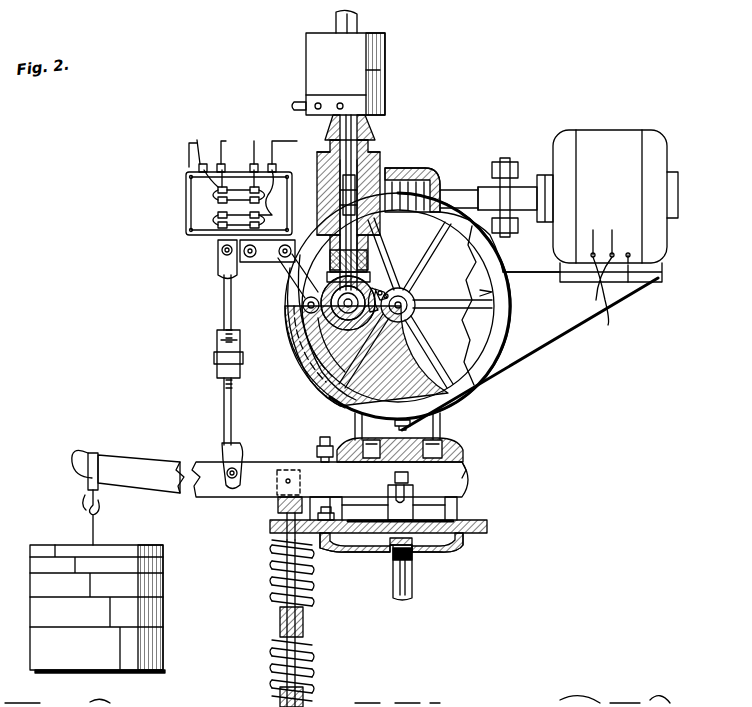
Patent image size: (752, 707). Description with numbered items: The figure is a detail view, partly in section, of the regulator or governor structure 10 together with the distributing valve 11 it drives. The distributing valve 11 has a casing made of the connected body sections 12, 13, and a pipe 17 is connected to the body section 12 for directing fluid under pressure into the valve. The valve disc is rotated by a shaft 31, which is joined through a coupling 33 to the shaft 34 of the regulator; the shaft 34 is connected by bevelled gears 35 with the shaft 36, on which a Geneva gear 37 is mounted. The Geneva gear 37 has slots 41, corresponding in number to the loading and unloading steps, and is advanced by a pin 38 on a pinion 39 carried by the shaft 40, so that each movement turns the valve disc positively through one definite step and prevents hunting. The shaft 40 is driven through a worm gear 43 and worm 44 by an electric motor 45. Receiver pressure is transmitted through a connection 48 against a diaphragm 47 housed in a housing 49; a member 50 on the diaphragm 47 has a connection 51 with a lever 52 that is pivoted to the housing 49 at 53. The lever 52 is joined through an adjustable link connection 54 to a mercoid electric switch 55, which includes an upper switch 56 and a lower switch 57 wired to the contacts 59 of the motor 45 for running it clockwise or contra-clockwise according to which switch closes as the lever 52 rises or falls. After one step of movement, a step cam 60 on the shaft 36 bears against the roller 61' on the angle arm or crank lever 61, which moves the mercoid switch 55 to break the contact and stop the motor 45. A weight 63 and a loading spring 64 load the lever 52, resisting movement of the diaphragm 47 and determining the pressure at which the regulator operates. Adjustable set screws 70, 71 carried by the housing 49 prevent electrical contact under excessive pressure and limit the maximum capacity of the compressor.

The regulator or governor structure 10 is at (505, 358).
The distributing valve 11 is at (370, 76).
The body section 12 is at (364, 50).
The body section 13 is at (385, 106).
The pipe 17 is at (357, 22).
The shaft 31 is at (347, 162).
The coupling 33 is at (330, 185).
The shaft 34 is at (298, 262).
The bevelled gears 35 is at (303, 305).
The shaft 36 is at (300, 345).
The Geneva gear 37 is at (348, 403).
The pin 38 is at (410, 290).
The pinion 39 is at (405, 307).
The shaft 40 is at (398, 322).
The slots 41 is at (398, 265).
The worm gear 43 is at (455, 398).
The worm 44 is at (418, 172).
The electric motor 45 is at (604, 135).
The diaphragm 47 is at (468, 556).
The connection 48 is at (412, 583).
The housing 49 is at (468, 518).
The member 50 is at (412, 503).
The connection 51 is at (358, 531).
The lever 52 is at (250, 490).
The pivot 53 is at (462, 478).
The adjustable link connection 54 is at (225, 312).
The mercoid electric switch 55 is at (193, 209).
The upper switch 56 is at (236, 200).
The lower switch 57 is at (208, 222).
The contacts 59 is at (606, 322).
The cam 60 is at (326, 312).
The crank lever 61 is at (285, 277).
The roller 61' is at (202, 358).
The weight 63 is at (168, 611).
The loading spring 64 is at (312, 636).
The adjustable set screw 70 is at (317, 444).
The adjustable set screw 71 is at (325, 525).